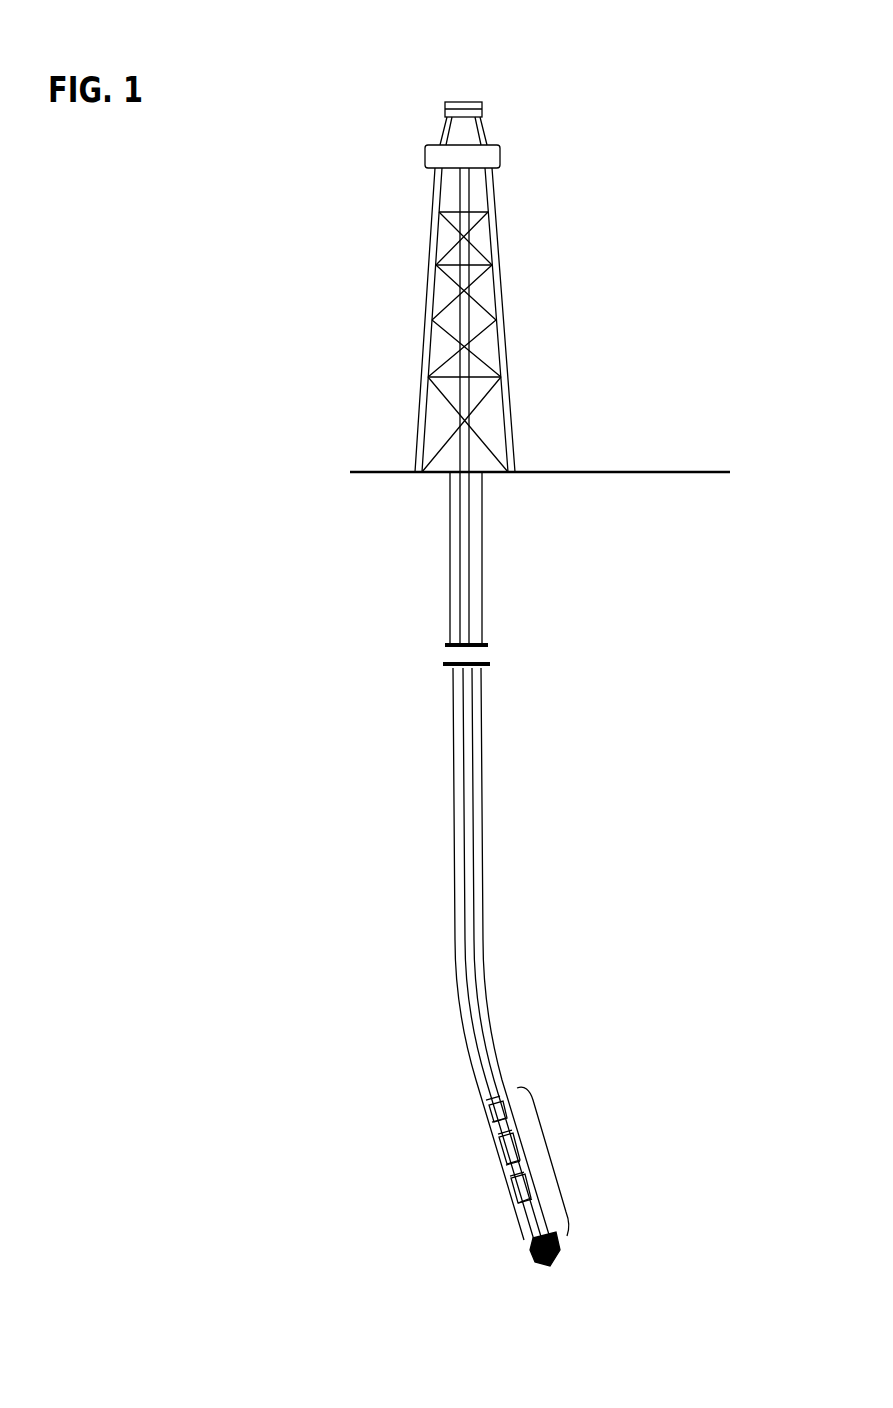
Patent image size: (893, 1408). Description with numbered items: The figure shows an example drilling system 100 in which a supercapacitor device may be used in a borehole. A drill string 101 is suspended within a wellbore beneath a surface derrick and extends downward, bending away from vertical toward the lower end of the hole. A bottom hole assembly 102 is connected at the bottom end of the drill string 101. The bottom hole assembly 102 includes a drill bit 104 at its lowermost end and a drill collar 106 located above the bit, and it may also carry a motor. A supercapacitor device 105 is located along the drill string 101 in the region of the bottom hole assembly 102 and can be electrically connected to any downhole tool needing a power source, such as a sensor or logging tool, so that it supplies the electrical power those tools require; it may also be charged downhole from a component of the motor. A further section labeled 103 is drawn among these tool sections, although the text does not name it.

The drilling system 100 is at (578, 62).
The drill string 101 is at (453, 695).
The bottom hole assembly 102 is at (522, 1212).
The tool section 103 is at (490, 1170).
The drill bit 104 is at (528, 1312).
The supercapacitor device 105 is at (485, 1198).
The drill collar 106 is at (500, 1228).